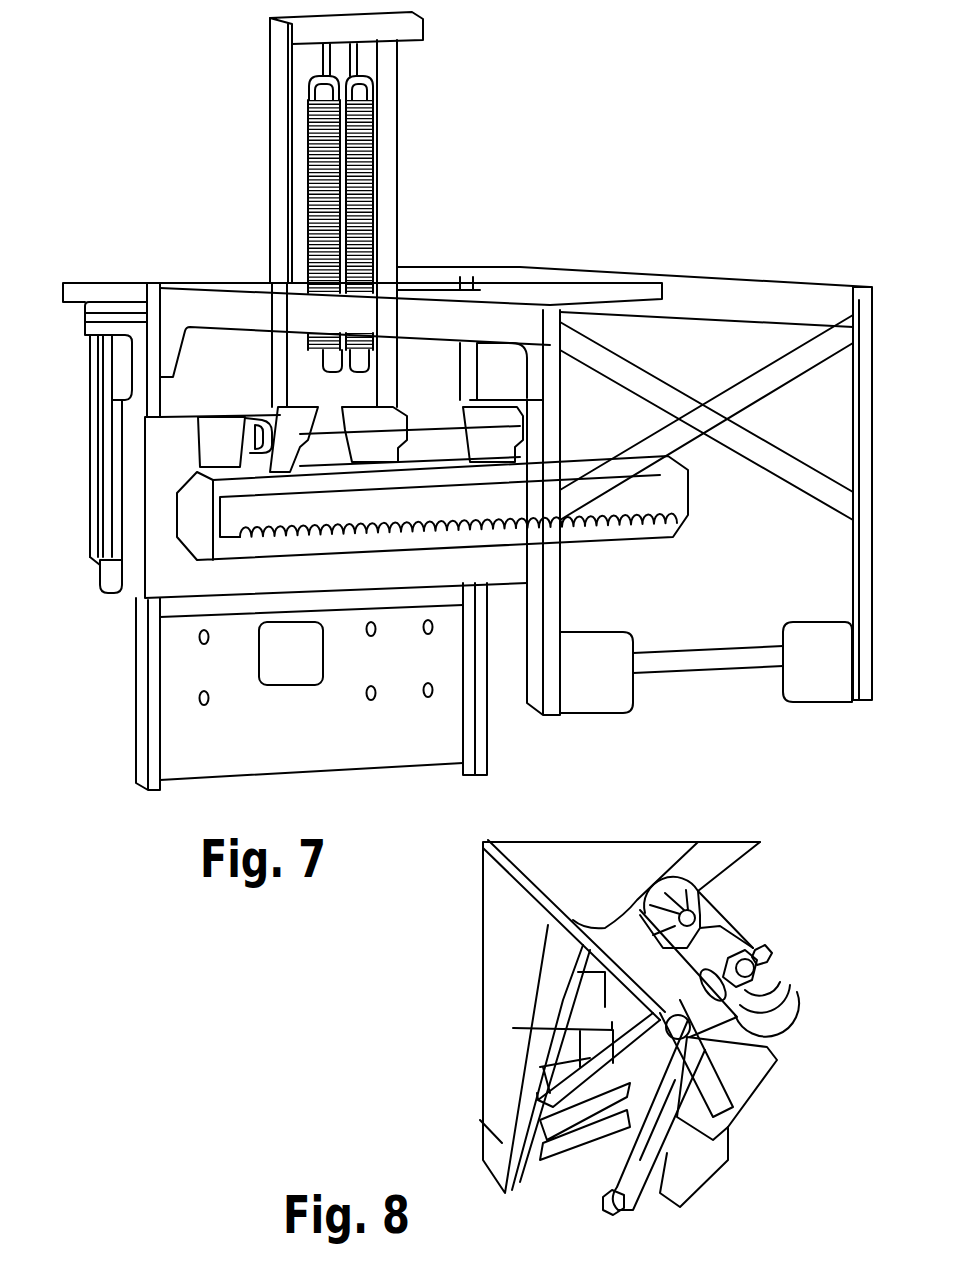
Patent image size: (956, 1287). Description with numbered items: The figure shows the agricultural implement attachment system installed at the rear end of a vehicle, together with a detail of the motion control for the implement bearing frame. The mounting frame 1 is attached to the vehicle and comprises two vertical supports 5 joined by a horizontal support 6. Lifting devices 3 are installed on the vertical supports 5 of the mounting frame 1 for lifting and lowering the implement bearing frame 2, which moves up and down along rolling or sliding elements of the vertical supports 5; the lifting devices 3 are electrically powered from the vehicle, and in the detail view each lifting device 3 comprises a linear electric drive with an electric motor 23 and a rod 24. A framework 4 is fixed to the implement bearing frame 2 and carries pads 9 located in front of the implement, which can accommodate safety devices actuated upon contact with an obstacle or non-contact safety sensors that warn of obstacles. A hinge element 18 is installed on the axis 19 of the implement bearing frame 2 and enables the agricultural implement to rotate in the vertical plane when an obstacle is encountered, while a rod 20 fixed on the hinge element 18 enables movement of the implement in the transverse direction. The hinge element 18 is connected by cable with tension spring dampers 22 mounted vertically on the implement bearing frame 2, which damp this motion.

In FIG. 7, the mounting frame 1 is at (173, 745).
In FIG. 8, the mounting frame 1 is at (495, 982).
In FIG. 7, the implement bearing frame 2 is at (155, 560).
In FIG. 8, the implement bearing frame 2 is at (753, 1070).
In FIG. 7, the lifting devices 3 is at (103, 473).
In FIG. 8, the lifting devices 3 is at (693, 1056).
In FIG. 7, the framework 4 is at (858, 450).
In FIG. 7, the vertical supports 5 is at (145, 665).
In FIG. 7, the horizontal support 6 is at (260, 282).
In FIG. 8, the horizontal support 6 is at (637, 953).
In FIG. 7, the pads 9 is at (588, 687).
In FIG. 7, the hinge element 18 is at (215, 437).
In FIG. 7, the axis 19 is at (338, 430).
In FIG. 7, the rod 20 is at (398, 502).
In FIG. 7, the tension spring dampers 22 is at (357, 197).
In FIG. 8, the electric motor 23 is at (722, 942).
In FIG. 8, the rod 24 is at (648, 1158).